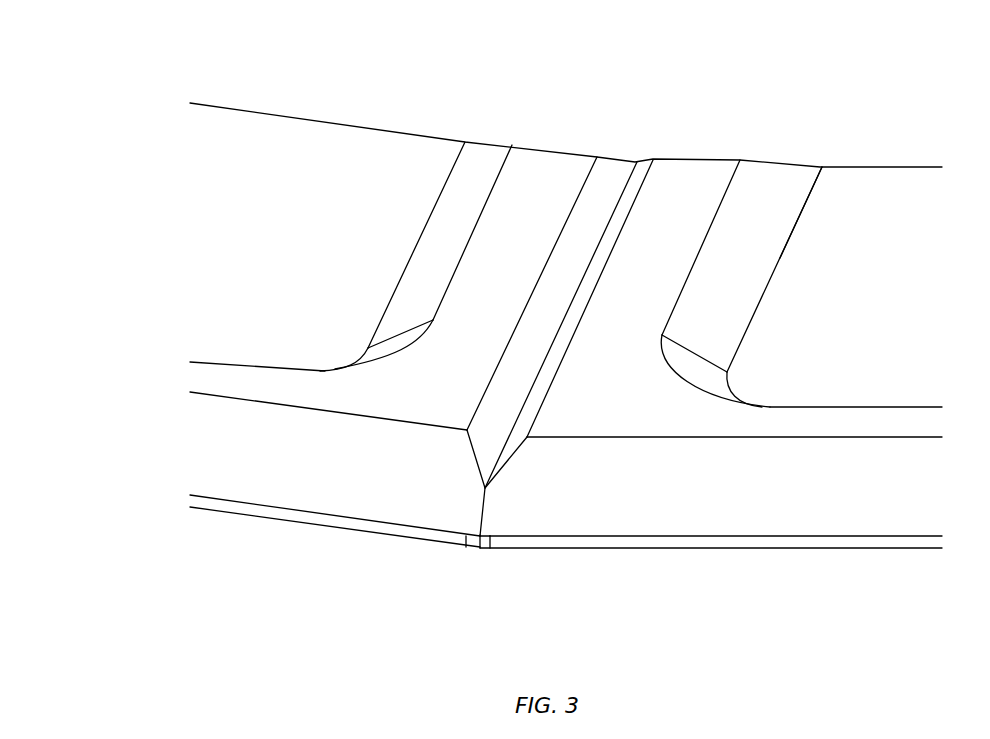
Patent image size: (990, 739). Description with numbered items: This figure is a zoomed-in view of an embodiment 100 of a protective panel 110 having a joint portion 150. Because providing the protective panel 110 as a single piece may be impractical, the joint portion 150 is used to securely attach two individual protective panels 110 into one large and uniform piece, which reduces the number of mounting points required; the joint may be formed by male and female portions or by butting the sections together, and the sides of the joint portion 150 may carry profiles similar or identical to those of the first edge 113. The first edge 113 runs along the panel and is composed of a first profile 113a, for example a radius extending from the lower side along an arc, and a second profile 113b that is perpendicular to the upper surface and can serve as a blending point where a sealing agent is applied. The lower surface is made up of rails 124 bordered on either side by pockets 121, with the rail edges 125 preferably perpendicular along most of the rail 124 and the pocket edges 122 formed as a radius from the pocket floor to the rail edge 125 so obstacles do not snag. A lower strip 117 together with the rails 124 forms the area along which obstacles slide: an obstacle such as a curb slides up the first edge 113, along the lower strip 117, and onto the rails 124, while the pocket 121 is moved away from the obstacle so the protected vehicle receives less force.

The embodiment 100 is at (314, 43).
The protective panel 110 is at (293, 584).
The first edge 113 is at (229, 453).
The first profile 113a is at (823, 498).
The second profile 113b is at (657, 542).
The lower strip 117 is at (853, 418).
The pocket 121 is at (872, 311).
The pocket edge 122 is at (805, 205).
The rail 124 is at (511, 310).
The rail edge 125 is at (730, 190).
The joint portion 150 is at (617, 203).